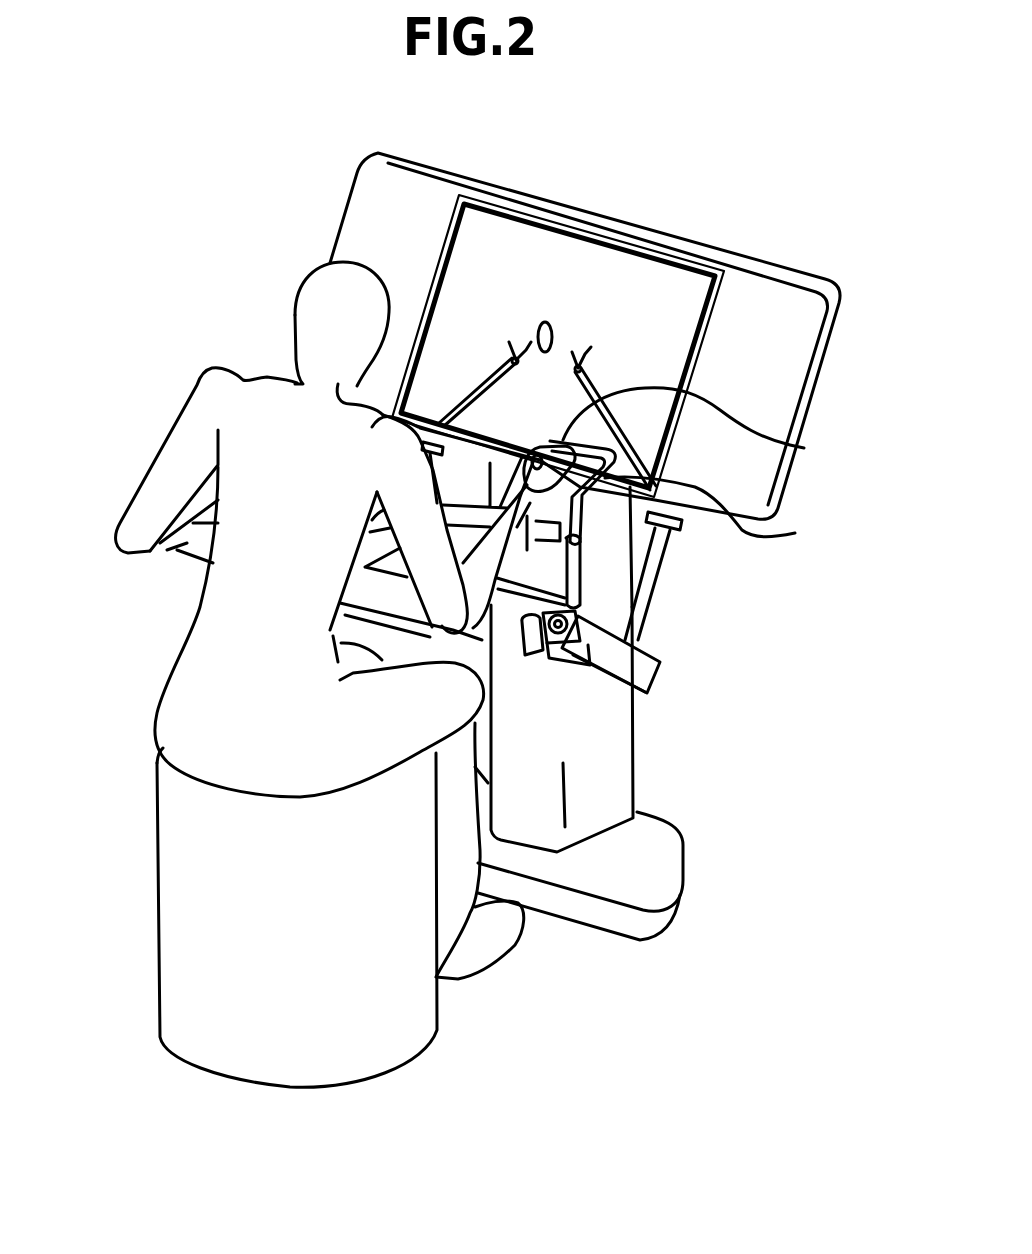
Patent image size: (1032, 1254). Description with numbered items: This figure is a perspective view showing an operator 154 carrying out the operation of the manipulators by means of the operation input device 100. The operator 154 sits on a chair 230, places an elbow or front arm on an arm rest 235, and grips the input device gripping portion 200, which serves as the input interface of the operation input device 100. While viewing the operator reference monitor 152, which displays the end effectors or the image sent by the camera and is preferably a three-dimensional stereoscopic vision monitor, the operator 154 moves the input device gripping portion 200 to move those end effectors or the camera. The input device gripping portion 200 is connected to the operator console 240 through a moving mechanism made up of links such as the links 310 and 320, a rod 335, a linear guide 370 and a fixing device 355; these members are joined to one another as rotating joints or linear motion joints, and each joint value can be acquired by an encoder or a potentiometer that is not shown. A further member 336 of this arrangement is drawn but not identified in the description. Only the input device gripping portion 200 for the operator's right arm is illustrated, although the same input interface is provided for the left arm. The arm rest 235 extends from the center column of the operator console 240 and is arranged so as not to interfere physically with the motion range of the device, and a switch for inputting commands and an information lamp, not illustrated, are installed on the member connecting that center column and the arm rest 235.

The operation input device 100 is at (698, 762).
The operator reference monitor 152 is at (531, 255).
The operator 154 is at (193, 715).
The input device gripping portion 200 is at (804, 448).
The chair 230 is at (193, 925).
The arm rest 235 is at (168, 560).
The operator console 240 is at (387, 204).
The link 310 is at (795, 533).
The link 320 is at (595, 557).
The rod 335 is at (572, 645).
The joint 336 is at (545, 632).
The fixing device 355 is at (648, 593).
The linear guide 370 is at (641, 672).